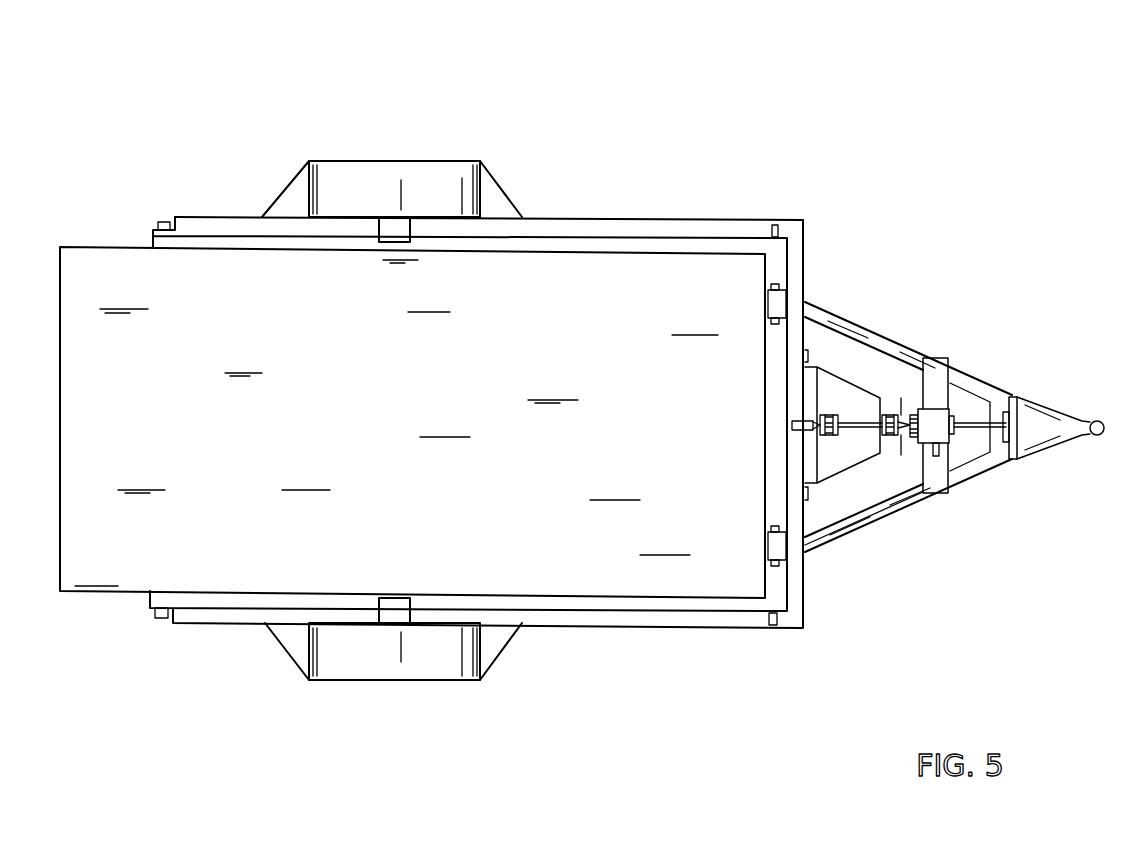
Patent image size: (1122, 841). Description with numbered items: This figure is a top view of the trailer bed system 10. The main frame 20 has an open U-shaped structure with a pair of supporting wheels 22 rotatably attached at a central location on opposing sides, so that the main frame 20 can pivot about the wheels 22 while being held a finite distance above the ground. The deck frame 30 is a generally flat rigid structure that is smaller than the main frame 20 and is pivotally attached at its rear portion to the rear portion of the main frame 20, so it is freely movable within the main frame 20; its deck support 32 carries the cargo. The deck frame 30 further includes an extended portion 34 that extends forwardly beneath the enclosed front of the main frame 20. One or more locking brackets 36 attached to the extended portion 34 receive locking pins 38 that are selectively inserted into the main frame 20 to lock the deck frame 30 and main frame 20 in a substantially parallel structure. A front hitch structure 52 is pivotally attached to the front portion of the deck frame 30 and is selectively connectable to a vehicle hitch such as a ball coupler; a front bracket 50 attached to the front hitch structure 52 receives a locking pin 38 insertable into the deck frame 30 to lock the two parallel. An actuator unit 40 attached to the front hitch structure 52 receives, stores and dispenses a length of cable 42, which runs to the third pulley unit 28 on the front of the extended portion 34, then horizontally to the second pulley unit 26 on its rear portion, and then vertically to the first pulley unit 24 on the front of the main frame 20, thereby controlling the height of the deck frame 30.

The trailer bed system 10 is at (596, 152).
The main frame 20 is at (208, 208).
The supporting wheels 22 is at (396, 160).
The first pulley unit 24 is at (794, 423).
The second pulley unit 26 is at (841, 318).
The third pulley unit 28 is at (908, 413).
The deck frame 30 is at (102, 242).
The deck support 32 is at (105, 553).
The extended portion 34 is at (895, 414).
The locking brackets 36 is at (827, 414).
The locking pins 38 is at (840, 378).
The actuator unit 40 is at (958, 368).
The cable 42 is at (890, 437).
The front bracket 50 is at (951, 440).
The front hitch structure 52 is at (843, 533).